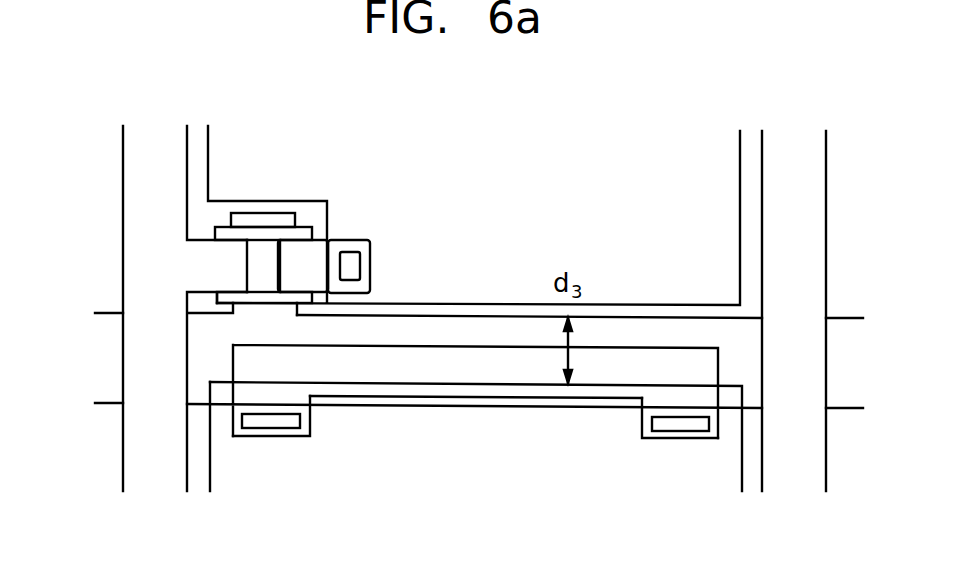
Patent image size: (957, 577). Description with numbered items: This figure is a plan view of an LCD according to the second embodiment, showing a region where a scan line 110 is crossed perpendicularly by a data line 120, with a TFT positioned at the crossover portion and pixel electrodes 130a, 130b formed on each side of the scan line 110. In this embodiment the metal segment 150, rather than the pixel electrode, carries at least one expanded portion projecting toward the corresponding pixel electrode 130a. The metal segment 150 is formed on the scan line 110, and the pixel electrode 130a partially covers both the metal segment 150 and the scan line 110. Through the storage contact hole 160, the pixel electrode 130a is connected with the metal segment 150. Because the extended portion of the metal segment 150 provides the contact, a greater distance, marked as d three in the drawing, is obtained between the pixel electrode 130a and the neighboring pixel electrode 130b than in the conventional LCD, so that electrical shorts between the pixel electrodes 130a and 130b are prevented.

The scan line 110 is at (110, 380).
The data line 120 is at (143, 218).
The pixel electrode 130a is at (742, 470).
The neighboring pixel electrode 130b is at (467, 240).
The metal segment 150 is at (442, 365).
The storage contact hole 160 is at (285, 425).